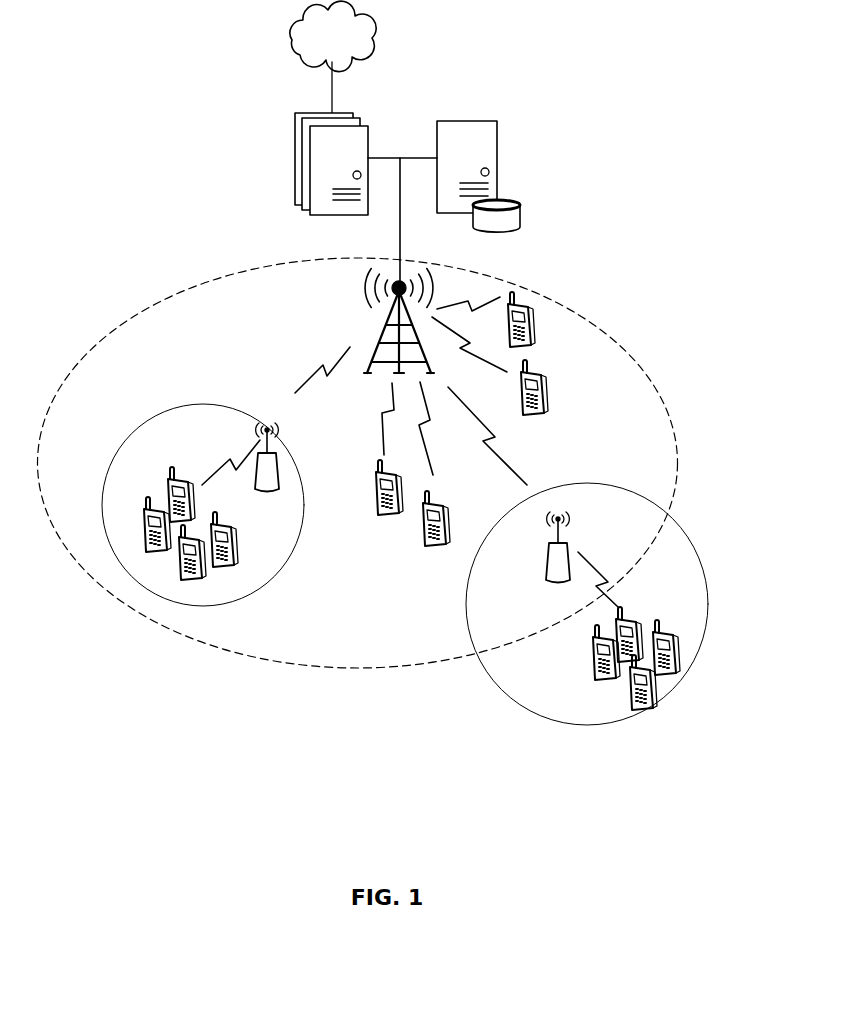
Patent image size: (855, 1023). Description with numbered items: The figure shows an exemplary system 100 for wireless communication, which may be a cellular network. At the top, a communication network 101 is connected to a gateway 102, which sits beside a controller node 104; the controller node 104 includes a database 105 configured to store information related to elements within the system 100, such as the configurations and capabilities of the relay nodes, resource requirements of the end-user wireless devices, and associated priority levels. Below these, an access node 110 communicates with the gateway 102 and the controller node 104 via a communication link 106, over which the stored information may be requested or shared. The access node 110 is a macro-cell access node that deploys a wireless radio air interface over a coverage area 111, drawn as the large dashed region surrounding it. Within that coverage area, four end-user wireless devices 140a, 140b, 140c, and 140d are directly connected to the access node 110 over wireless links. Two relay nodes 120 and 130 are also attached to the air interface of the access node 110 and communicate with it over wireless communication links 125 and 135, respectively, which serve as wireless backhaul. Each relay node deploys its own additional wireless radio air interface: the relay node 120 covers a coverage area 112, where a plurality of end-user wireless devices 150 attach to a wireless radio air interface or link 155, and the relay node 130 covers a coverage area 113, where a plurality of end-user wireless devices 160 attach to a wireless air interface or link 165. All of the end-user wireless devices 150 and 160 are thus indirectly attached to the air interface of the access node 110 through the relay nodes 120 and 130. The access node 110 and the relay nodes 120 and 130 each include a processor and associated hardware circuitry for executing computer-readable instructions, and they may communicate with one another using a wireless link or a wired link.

The system 100 is at (432, 68).
The communication network 101 is at (319, 40).
The gateway 102 is at (302, 117).
The controller node 104 is at (497, 121).
The database 105 is at (523, 200).
The communication link 106 is at (400, 230).
The access node 110 is at (386, 335).
The coverage area 111 is at (281, 661).
The coverage area 112 is at (117, 452).
The coverage area 113 is at (703, 647).
The relay node 120 is at (279, 465).
The wireless communication link 125 is at (315, 368).
The relay node 130 is at (570, 548).
The wireless communication link 135 is at (503, 452).
The end-user wireless device 140a is at (530, 303).
The end-user wireless device 140b is at (547, 375).
The end-user wireless device 140c is at (390, 517).
The end-user wireless device 140d is at (447, 548).
The end-user wireless devices 150 is at (238, 568).
The wireless radio air interface or link 155 is at (244, 451).
The end-user wireless devices 160 is at (599, 692).
The wireless air interface or link 165 is at (617, 600).